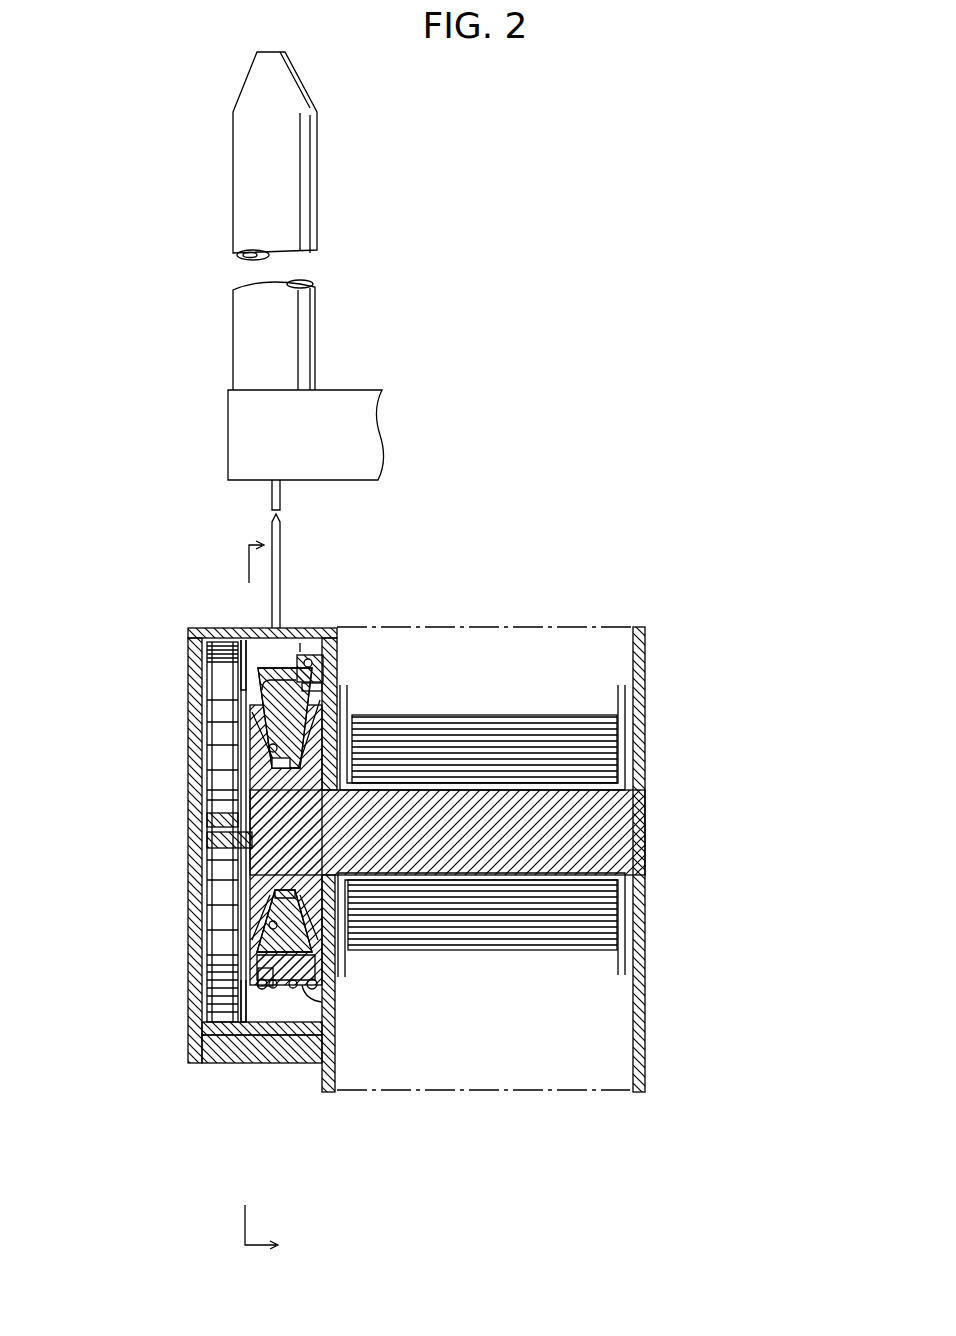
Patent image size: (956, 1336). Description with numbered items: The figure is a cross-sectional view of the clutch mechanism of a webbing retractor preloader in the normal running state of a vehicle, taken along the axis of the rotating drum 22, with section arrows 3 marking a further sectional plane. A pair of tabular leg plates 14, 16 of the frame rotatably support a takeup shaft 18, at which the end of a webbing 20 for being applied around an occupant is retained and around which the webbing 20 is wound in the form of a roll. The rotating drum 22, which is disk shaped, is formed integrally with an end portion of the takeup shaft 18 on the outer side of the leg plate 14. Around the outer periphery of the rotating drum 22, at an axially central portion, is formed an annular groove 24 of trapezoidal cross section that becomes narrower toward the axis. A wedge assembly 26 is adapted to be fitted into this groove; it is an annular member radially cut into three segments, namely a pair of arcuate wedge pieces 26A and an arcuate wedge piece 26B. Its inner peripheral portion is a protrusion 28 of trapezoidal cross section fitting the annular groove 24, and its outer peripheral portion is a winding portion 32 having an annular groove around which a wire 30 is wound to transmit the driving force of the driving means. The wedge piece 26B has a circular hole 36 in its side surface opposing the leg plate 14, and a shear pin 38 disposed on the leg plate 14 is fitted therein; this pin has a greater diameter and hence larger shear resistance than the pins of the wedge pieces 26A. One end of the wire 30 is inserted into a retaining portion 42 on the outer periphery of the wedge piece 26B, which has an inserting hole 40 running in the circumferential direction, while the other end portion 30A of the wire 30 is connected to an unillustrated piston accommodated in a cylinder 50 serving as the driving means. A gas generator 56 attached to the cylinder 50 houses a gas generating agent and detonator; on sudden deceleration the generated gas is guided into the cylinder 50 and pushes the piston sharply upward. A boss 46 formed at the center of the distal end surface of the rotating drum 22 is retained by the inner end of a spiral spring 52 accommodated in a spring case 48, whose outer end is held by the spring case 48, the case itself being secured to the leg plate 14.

The leg plate 14 is at (322, 1083).
The leg plate 16 is at (645, 1063).
The takeup shaft 18 is at (646, 828).
The webbing 20 is at (465, 715).
The rotating drum 22 is at (262, 878).
The annular groove 24 is at (270, 755).
The wedge assembly 26 is at (248, 628).
The arcuate wedge piece 26A is at (200, 1060).
The arcuate wedge piece 26B is at (262, 688).
The protrusion 28 is at (287, 768).
The wire 30 is at (281, 565).
The other end portion of the wire 30A is at (281, 500).
The winding portion 32 is at (323, 1003).
The circular hole 36 is at (320, 674).
The shear pin 38 is at (335, 684).
The inserting hole 40 is at (306, 659).
The retaining portion 42 is at (308, 655).
The boss 46 is at (213, 842).
The spring case 48 is at (193, 1022).
The cylinder 50 is at (312, 203).
The spiral spring 52 is at (227, 722).
The gas generator 56 is at (360, 388).
The section line 3 is at (254, 897).